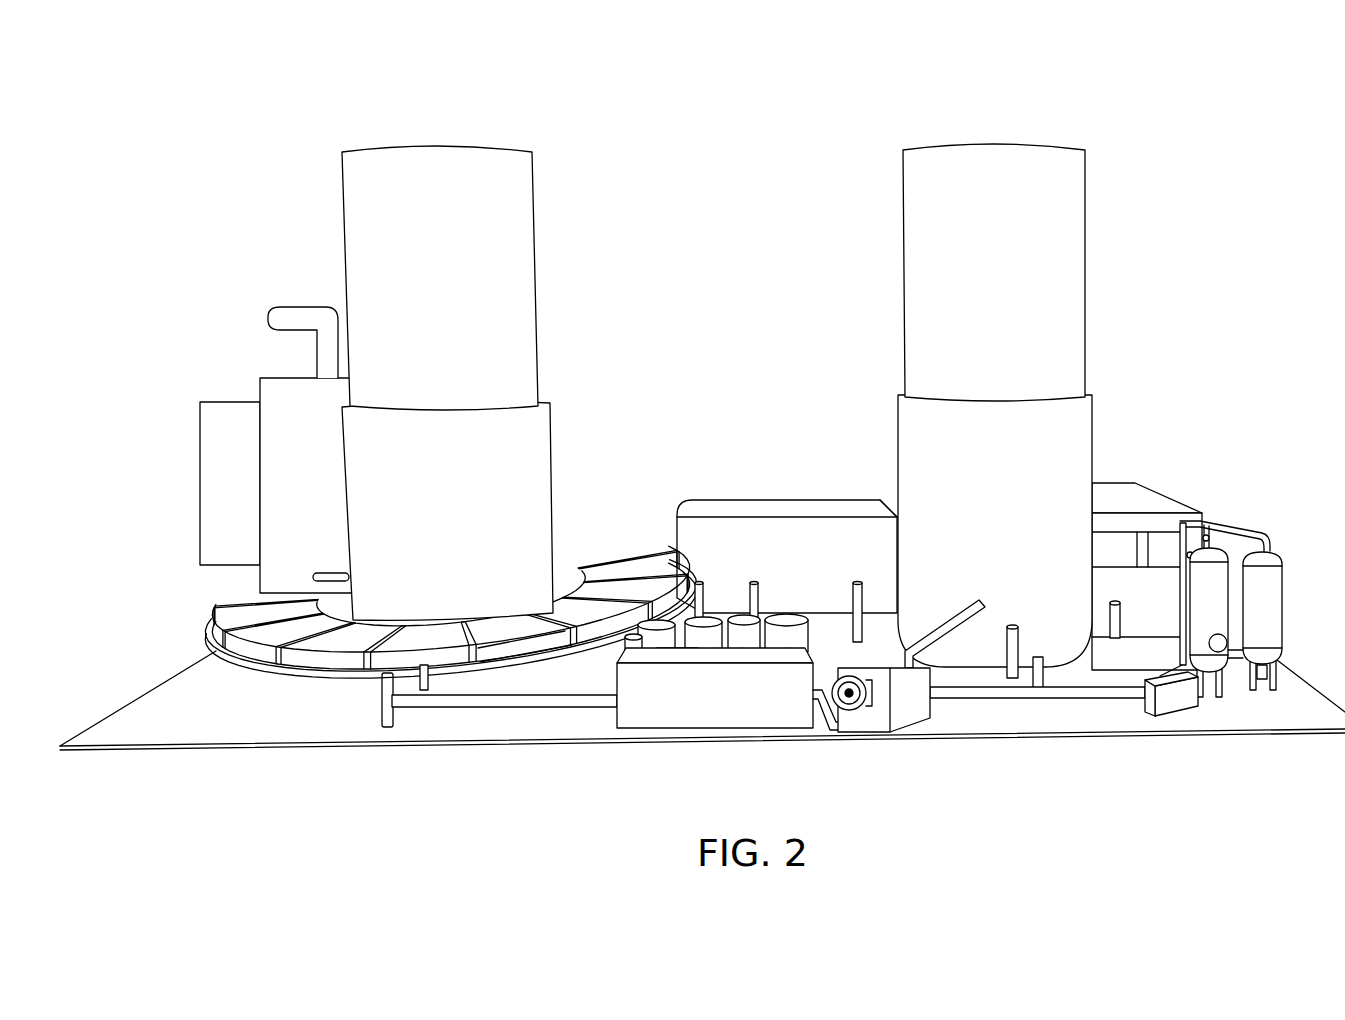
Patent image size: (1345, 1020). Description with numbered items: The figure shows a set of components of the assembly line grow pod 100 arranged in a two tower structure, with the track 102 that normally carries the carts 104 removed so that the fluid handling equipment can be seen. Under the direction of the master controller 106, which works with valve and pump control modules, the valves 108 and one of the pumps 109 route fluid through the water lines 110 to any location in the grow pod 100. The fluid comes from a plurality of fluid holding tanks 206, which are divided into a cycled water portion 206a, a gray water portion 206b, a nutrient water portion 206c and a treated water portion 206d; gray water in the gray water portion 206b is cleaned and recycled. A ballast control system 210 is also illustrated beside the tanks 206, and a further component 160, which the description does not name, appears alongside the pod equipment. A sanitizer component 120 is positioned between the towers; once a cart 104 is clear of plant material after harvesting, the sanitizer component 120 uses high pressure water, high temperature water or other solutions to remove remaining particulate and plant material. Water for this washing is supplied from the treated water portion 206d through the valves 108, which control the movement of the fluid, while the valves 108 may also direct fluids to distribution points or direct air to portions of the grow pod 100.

The assembly line grow pod 100 is at (702, 442).
The track 102 is at (450, 640).
The cart 104 is at (369, 652).
The master controller 106 is at (453, 638).
The valve 108 is at (299, 543).
The pump 109 is at (894, 748).
The water line 110 is at (536, 711).
The sanitizer component 120 is at (787, 497).
The unit 160 is at (194, 435).
The fluid holding tanks 206 is at (843, 388).
The cycled water portion 206a is at (479, 297).
The gray water portion 206b is at (481, 517).
The nutrient water portion 206c is at (1032, 292).
The treated water portion 206d is at (1032, 509).
The ballast control system 210 is at (1218, 562).